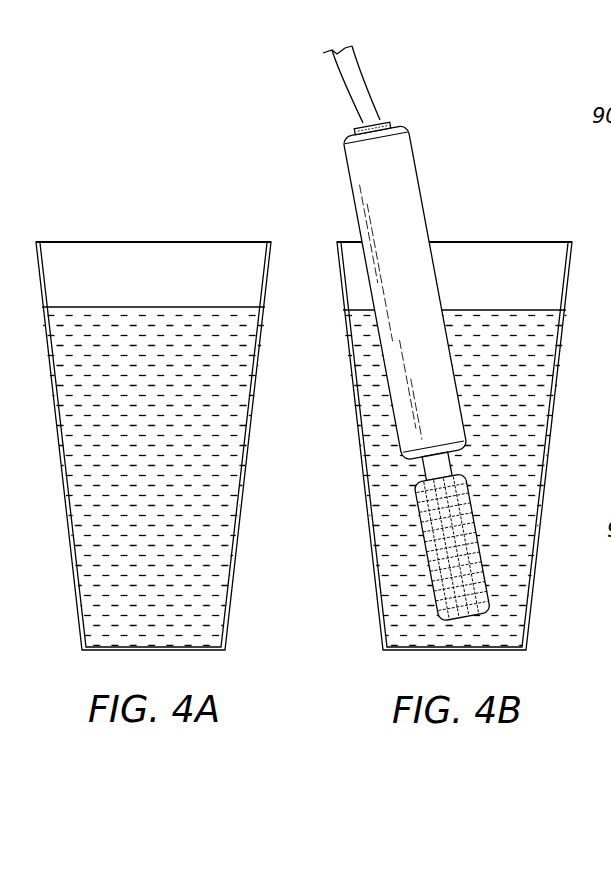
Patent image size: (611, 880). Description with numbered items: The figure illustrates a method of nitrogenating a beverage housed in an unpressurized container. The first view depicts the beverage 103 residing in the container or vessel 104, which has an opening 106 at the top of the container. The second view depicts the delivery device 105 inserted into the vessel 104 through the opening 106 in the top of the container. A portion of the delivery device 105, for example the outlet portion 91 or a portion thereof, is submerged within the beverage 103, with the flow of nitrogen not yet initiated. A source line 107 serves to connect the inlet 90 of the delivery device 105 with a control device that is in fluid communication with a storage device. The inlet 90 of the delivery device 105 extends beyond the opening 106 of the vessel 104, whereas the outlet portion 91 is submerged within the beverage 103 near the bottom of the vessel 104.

In FIG. 4B, the inlet 90 is at (357, 128).
In FIG. 4B, the outlet portion 91 is at (420, 547).
In FIG. 4A, the beverage 103 is at (176, 468).
In FIG. 4B, the beverage 103 is at (454, 478).
In FIG. 4A, the vessel 104 is at (233, 572).
In FIG. 4B, the vessel 104 is at (533, 572).
In FIG. 4B, the delivery device 105 is at (480, 218).
In FIG. 4A, the opening 106 is at (207, 242).
In FIG. 4B, the source line 107 is at (368, 90).